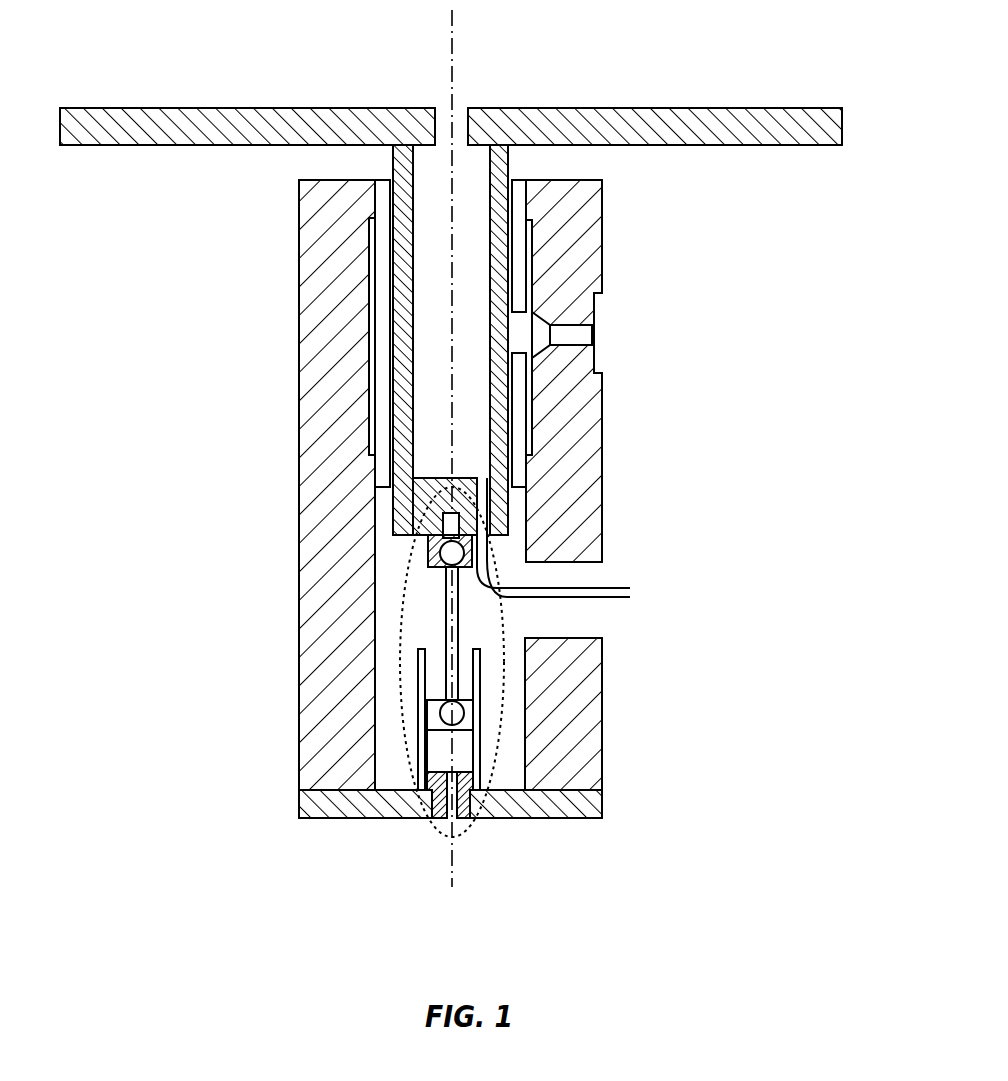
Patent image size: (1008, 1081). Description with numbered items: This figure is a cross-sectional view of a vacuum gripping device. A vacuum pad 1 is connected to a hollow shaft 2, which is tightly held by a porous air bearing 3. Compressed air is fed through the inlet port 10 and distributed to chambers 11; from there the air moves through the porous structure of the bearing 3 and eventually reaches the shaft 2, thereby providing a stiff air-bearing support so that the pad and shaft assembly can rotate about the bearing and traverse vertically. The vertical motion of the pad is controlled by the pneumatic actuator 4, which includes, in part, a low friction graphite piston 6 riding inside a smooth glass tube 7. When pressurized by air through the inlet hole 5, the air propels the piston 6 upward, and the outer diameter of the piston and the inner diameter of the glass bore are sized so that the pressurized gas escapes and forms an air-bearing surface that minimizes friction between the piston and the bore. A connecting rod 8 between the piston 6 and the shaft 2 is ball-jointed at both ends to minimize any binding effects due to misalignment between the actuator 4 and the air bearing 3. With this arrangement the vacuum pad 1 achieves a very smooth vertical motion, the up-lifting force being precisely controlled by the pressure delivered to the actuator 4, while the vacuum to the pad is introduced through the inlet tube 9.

The vacuum pad 1 is at (337, 115).
The hollow shaft 2 is at (502, 158).
The porous air bearing 3 is at (382, 330).
The pneumatic actuator 4 is at (402, 617).
The inlet hole 5 is at (444, 826).
The low friction graphite piston 6 is at (470, 792).
The smooth glass tube 7 is at (485, 665).
The connecting rod 8 is at (459, 607).
The inlet tube 9 is at (632, 592).
The inlet port 10 is at (593, 333).
The chambers 11 is at (545, 382).